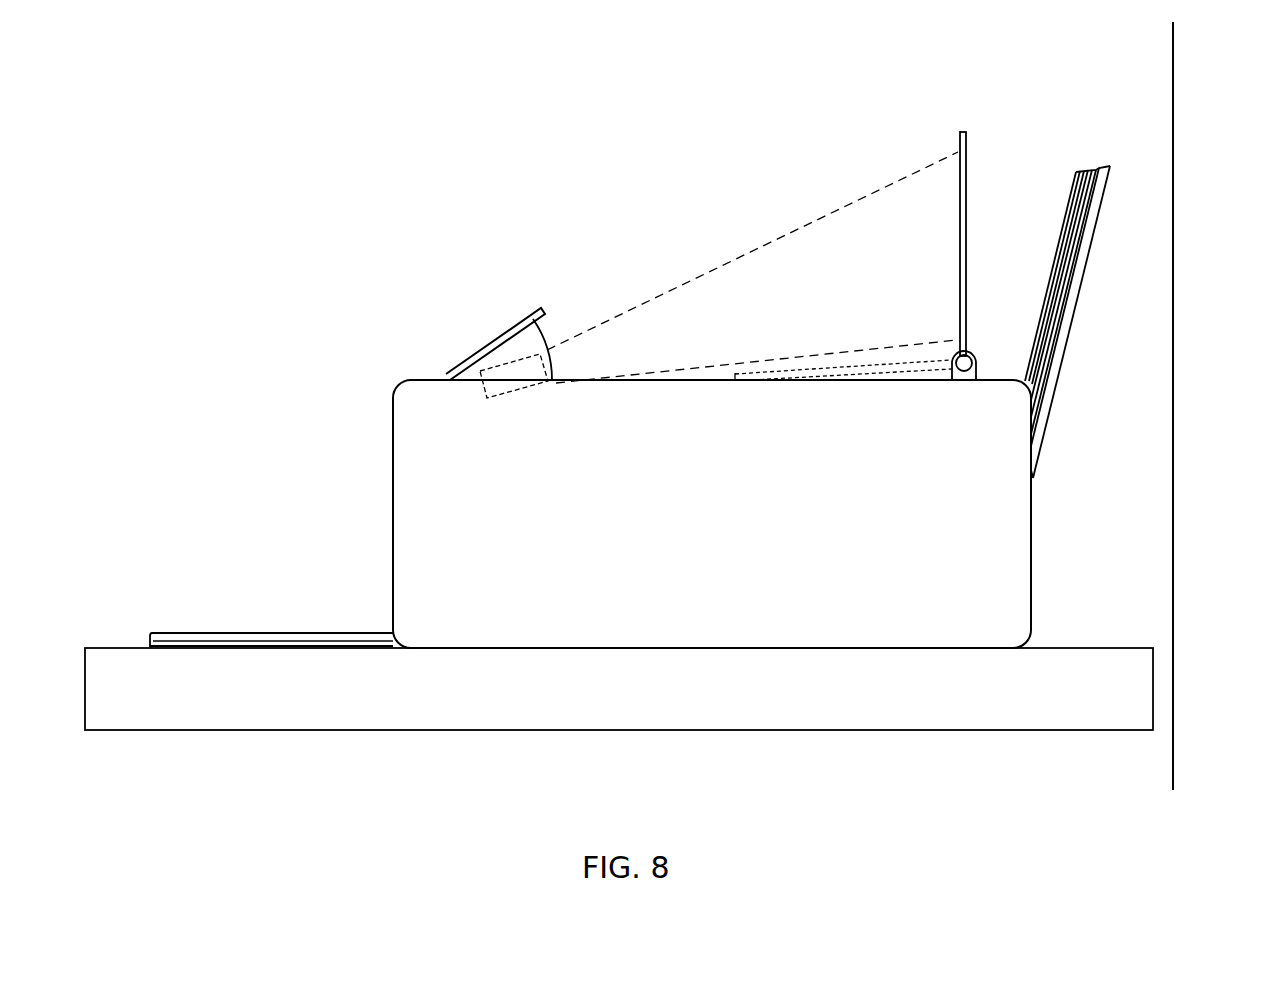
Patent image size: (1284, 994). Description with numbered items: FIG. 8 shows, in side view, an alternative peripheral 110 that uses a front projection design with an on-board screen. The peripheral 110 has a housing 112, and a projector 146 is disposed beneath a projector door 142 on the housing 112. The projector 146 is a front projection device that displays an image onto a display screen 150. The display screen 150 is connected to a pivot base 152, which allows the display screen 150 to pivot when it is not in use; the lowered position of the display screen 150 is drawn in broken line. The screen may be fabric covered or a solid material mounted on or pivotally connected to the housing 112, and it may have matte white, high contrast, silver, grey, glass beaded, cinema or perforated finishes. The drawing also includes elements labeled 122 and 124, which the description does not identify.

The peripheral 110 is at (322, 132).
The housing 112 is at (1055, 502).
The stack of sheets 122 is at (1078, 278).
The tray 124 is at (222, 638).
The projector door 142 is at (497, 342).
The projector 146 is at (483, 388).
The display screen 150 is at (967, 147).
The pivot base 152 is at (962, 372).